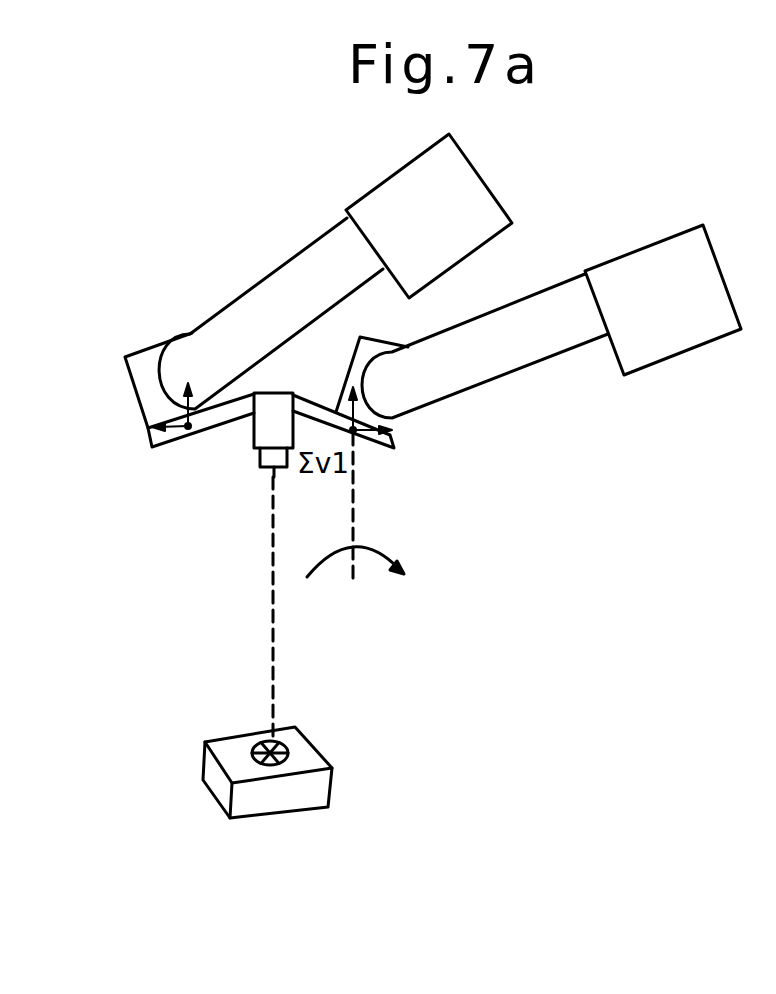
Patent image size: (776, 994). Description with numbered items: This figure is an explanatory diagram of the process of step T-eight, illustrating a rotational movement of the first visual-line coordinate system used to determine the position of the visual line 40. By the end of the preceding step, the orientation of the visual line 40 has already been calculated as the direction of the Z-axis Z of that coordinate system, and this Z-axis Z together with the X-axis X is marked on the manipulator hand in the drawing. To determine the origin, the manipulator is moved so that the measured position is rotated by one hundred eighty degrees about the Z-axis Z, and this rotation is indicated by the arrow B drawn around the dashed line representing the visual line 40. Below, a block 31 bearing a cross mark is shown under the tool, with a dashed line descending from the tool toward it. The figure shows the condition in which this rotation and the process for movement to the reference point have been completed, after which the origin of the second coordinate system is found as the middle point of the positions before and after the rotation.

The workpiece 31 is at (289, 752).
The visual line 40 is at (355, 490).
The arrow B is at (368, 568).
The X axis of coordinate system X is at (271, 428).
The Z-axis Z is at (290, 389).